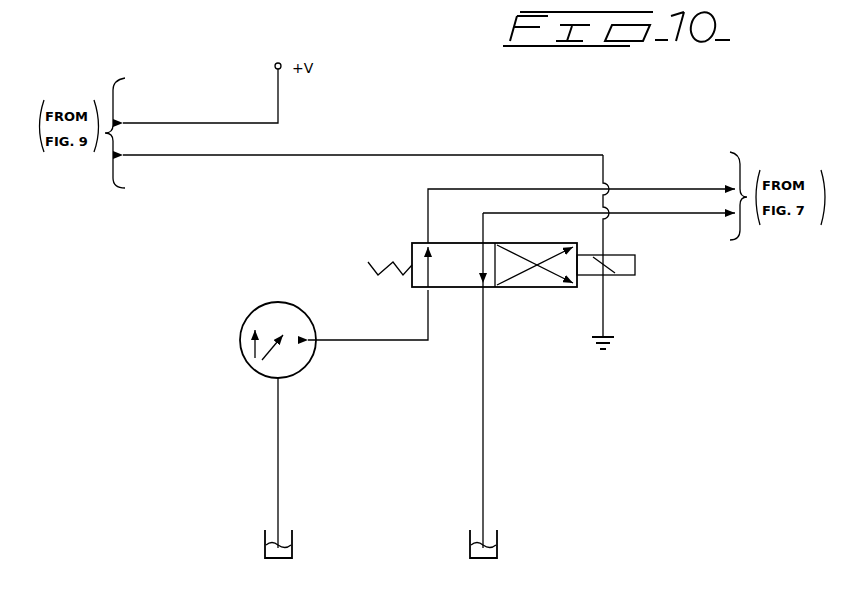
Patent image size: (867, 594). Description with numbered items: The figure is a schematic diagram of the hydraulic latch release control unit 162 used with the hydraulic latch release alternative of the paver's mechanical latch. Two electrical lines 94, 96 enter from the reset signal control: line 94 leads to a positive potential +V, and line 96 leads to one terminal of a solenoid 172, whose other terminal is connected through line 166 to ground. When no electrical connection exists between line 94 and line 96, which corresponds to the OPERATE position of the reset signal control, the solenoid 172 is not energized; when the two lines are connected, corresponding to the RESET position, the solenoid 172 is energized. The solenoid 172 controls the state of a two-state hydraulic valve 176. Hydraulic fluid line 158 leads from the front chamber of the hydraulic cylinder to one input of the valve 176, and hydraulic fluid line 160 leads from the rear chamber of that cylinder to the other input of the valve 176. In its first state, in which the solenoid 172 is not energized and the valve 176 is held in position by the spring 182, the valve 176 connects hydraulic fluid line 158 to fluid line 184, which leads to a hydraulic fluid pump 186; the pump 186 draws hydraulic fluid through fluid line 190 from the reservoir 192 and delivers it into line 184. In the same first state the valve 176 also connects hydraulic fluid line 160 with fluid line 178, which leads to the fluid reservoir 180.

The hydraulic latch release control unit 162 is at (437, 55).
The line 94 is at (182, 123).
The line 96 is at (360, 155).
The hydraulic fluid line 158 is at (665, 189).
The hydraulic fluid line 160 is at (665, 213).
The line 166 is at (605, 317).
The solenoid 172 is at (620, 277).
The two-state hydraulic valve 176 is at (520, 287).
The fluid line 178 is at (486, 462).
The fluid reservoir 180 is at (497, 545).
The spring 182 is at (382, 232).
The fluid line 184 is at (348, 340).
The hydraulic fluid pump 186 is at (275, 303).
The fluid line 190 is at (281, 462).
The reservoir 192 is at (292, 545).